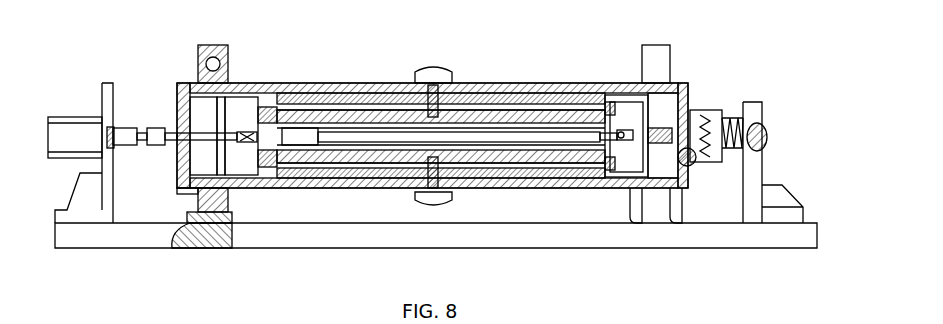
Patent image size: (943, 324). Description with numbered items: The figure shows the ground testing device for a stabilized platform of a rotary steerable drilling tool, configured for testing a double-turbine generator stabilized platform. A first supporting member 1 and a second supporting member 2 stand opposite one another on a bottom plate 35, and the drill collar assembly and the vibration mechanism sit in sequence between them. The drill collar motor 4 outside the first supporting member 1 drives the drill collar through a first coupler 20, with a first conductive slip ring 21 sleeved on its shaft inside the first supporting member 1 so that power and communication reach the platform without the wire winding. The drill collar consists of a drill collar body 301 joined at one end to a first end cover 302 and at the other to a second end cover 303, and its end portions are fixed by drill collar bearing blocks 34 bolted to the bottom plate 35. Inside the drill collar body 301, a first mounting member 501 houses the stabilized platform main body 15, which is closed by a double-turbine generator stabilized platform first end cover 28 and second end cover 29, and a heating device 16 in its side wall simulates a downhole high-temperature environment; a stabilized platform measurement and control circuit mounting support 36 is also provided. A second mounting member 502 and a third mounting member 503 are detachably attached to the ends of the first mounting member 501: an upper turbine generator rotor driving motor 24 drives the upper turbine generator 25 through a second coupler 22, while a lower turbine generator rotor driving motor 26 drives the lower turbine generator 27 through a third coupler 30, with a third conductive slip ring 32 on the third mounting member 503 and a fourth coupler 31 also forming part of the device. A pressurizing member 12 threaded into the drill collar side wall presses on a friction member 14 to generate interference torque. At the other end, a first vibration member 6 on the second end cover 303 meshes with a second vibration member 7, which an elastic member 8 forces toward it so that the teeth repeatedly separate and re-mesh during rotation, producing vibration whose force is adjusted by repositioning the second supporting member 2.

The first supporting member 1 is at (105, 88).
The second supporting member 2 is at (753, 177).
The drill collar motor 4 is at (100, 118).
The first vibration member 6 is at (698, 142).
The second vibration member 7 is at (717, 118).
The elastic member 8 is at (740, 115).
The pressurizing member 12 is at (438, 170).
The friction member 14 is at (413, 88).
The stabilized platform main body 15 is at (318, 178).
The heating device 16 is at (326, 95).
The first coupler 20 is at (156, 128).
The first conductive slip ring 21 is at (122, 128).
The second coupler 22 is at (250, 143).
The upper turbine generator rotor driving motor 24 is at (195, 150).
The upper turbine generator 25 is at (270, 105).
The lower turbine generator rotor driving motor 26 is at (680, 188).
The lower turbine generator 27 is at (582, 98).
The double-turbine generator stabilized platform first end cover 28 is at (270, 177).
The double-turbine generator stabilized platform second end cover 29 is at (587, 178).
The third coupler 30 is at (607, 103).
The fourth coupler 31 is at (212, 95).
The third conductive slip ring 32 is at (630, 128).
The drill collar bearing block 34 is at (226, 46).
The bottom plate 35 is at (517, 232).
The stabilized platform measurement and control circuit mounting support 36 is at (388, 130).
The drill collar body 301 is at (490, 88).
The first end cover 302 is at (183, 100).
The second end cover 303 is at (683, 97).
The first mounting member 501 is at (370, 173).
The second mounting member 502 is at (183, 177).
The third mounting member 503 is at (640, 182).